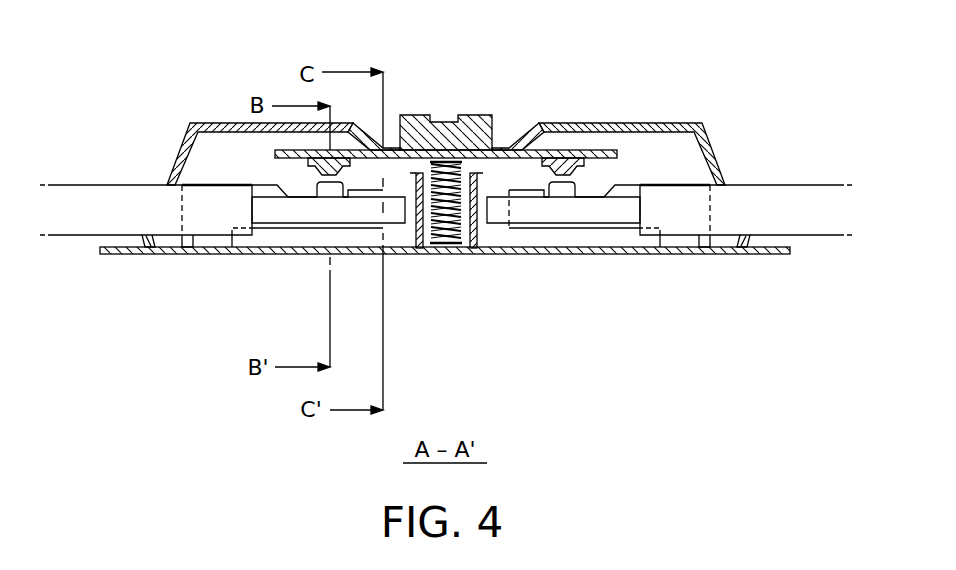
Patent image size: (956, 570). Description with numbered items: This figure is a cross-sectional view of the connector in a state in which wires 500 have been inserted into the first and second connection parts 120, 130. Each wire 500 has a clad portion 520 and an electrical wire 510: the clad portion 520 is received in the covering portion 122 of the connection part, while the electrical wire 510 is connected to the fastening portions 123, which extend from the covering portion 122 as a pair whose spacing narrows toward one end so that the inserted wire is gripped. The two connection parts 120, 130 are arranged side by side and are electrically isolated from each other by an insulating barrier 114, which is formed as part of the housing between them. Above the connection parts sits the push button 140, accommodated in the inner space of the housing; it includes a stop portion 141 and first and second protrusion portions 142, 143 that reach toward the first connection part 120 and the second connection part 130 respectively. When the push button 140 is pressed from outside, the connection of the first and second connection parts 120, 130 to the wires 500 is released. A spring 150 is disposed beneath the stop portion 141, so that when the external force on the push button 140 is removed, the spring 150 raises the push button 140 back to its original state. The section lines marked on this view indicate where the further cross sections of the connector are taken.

The insulating barrier 114 is at (417, 245).
The first connection part 120 is at (285, 230).
The covering portion 122 is at (210, 243).
The fastening portion 123 is at (312, 226).
The second connection part 130 is at (607, 230).
The push button 140 is at (443, 137).
The stop portion 141 is at (511, 152).
The first protrusion portion 142 is at (263, 207).
The second protrusion portion 143 is at (628, 207).
The spring 150 is at (437, 244).
The wire 500 is at (88, 42).
The electrical wire 510 is at (322, 172).
The clad portion 520 is at (122, 202).